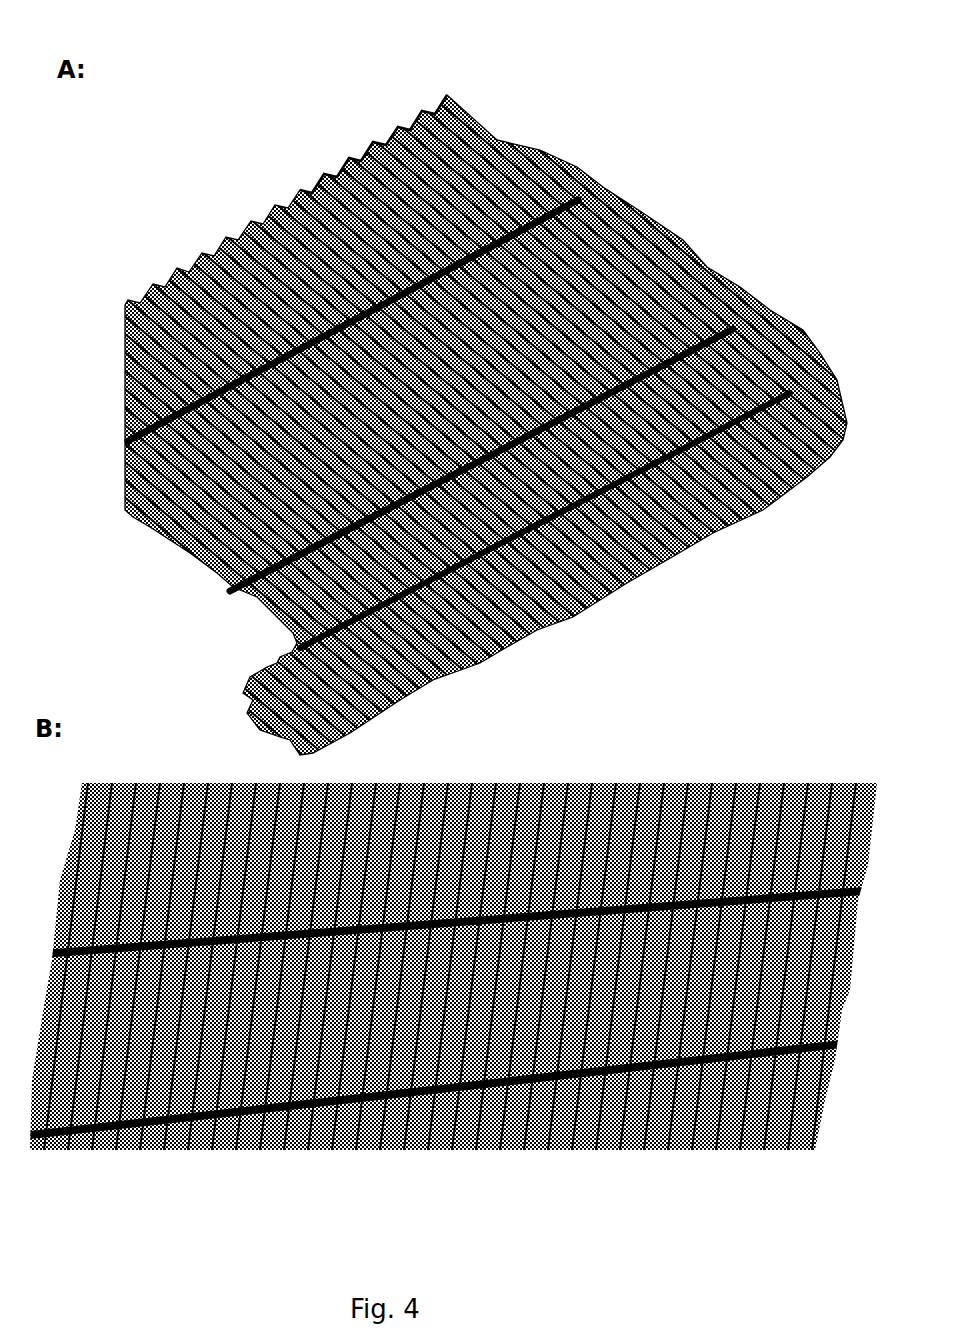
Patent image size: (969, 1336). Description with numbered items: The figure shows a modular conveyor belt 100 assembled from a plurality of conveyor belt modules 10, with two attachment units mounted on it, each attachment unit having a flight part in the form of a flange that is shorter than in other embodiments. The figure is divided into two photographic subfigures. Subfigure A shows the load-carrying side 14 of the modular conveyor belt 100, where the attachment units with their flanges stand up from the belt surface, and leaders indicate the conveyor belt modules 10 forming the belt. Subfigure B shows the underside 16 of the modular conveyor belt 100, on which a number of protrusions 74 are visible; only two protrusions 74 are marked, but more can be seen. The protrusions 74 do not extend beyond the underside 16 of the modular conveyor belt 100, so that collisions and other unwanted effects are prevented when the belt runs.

The modular conveyor belt 100 is at (488, 96).
The conveyor belt module 10 is at (615, 212).
The load-carrying side 14 is at (375, 100).
The underside 16 is at (600, 806).
The protrusion 74 is at (335, 960).